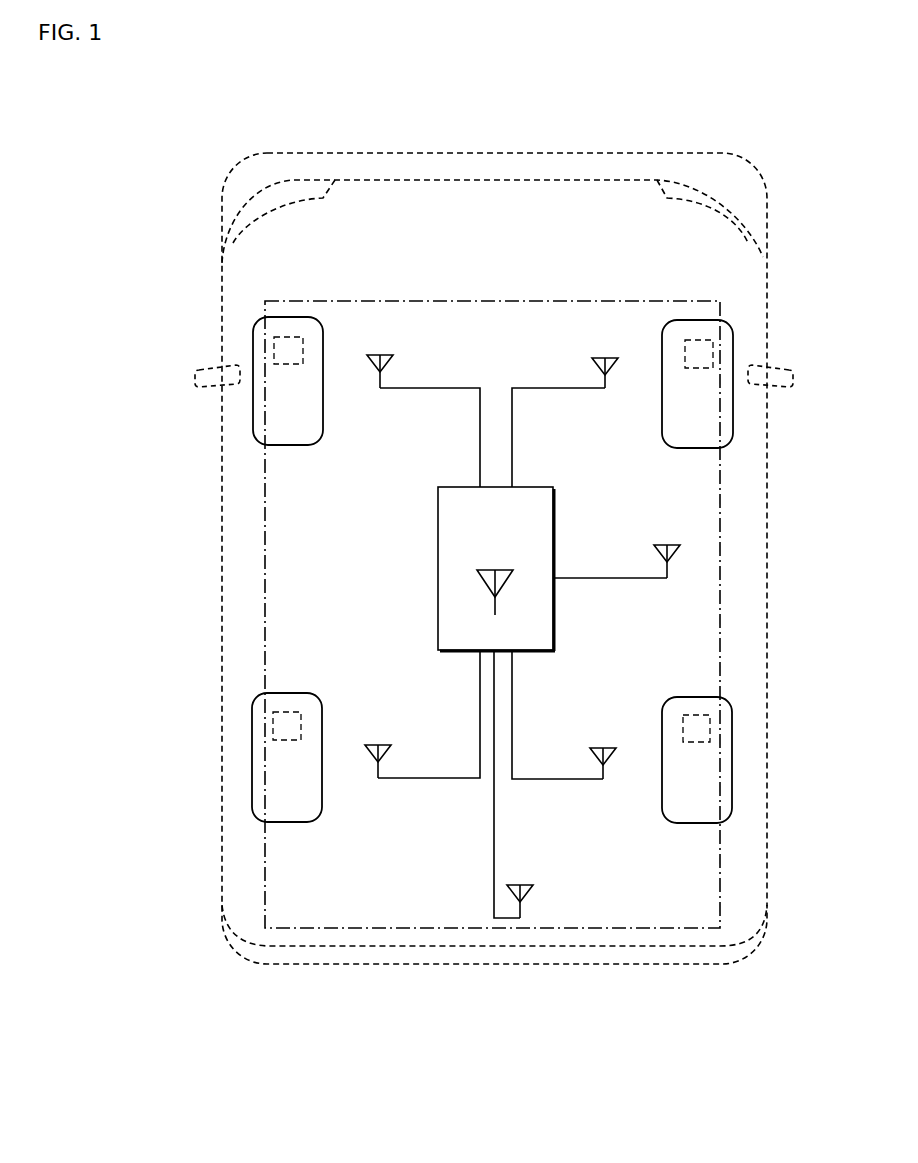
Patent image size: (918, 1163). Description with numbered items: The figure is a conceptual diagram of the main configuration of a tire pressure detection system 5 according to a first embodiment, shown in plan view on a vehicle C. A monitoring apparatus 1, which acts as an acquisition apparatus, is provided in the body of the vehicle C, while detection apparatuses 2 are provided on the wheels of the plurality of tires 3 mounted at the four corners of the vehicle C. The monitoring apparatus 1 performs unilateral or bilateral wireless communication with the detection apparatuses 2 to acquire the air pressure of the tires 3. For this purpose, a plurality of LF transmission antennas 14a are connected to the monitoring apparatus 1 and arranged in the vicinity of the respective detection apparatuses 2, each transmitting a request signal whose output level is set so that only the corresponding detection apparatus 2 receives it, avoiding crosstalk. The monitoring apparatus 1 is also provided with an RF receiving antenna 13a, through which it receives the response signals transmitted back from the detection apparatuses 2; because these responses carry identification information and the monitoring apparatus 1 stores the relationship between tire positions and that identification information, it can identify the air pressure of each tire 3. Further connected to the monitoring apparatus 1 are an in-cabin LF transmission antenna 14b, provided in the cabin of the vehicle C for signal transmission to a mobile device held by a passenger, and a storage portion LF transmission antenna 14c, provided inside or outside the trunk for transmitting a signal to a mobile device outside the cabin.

The vehicle C is at (668, 153).
The tire pressure detection system 5 is at (722, 558).
The tire 3 is at (276, 317).
The detection apparatus 2 is at (291, 337).
The monitoring apparatus 1 is at (555, 500).
The RF receiving antenna 13a is at (497, 570).
The LF transmission antenna 14a is at (380, 355).
The in-cabin LF transmission antenna 14b is at (667, 545).
The storage portion LF transmission antenna 14c is at (523, 885).